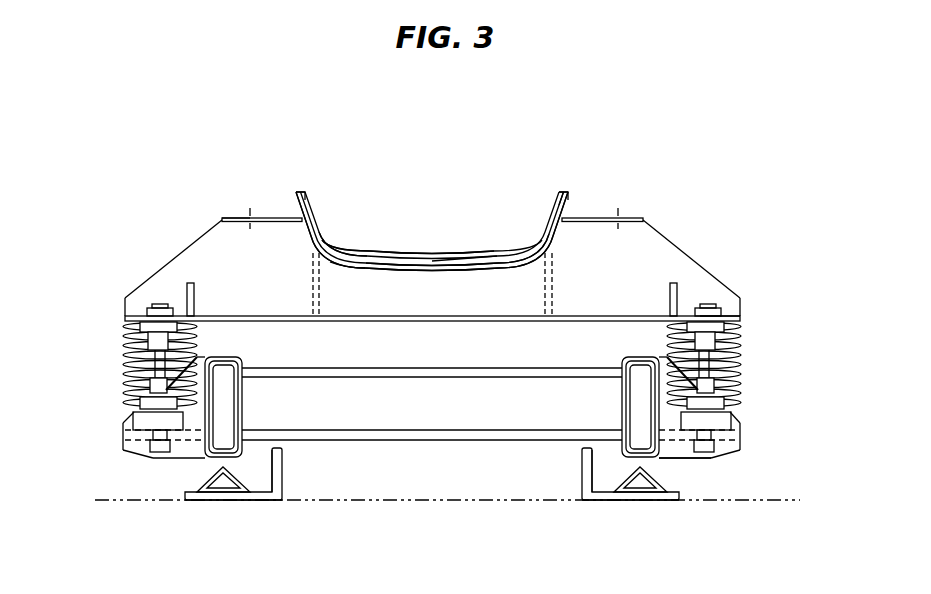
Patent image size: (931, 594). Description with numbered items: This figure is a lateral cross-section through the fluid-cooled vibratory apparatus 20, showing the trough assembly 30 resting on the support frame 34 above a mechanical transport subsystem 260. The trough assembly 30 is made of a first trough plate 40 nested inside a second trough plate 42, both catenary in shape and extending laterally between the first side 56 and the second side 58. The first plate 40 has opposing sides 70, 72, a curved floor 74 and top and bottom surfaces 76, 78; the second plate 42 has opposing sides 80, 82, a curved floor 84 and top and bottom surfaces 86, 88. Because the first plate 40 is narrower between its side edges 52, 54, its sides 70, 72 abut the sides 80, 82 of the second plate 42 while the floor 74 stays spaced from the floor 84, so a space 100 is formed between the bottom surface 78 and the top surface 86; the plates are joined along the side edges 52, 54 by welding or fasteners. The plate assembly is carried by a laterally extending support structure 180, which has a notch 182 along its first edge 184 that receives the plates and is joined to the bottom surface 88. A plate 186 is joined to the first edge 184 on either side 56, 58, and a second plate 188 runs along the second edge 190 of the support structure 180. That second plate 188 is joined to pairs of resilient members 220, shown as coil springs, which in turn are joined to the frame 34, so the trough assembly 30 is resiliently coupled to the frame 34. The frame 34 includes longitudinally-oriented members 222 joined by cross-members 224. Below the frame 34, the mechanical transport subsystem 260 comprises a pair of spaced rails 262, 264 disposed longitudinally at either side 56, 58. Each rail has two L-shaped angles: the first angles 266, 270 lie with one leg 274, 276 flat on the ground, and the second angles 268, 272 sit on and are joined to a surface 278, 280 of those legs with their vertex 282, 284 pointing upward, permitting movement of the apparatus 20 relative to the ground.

The fluid-cooled vibratory apparatus 20 is at (439, 222).
The trough assembly 30 is at (663, 250).
The support frame 34 is at (733, 452).
The first trough plate 40 is at (550, 229).
The second trough plate 42 is at (572, 200).
The first side edge 52 is at (300, 191).
The second side edge 54 is at (568, 190).
The first side 56 is at (147, 258).
The second side 58 is at (729, 257).
The first plate side 70 is at (313, 200).
The first plate side 72 is at (552, 200).
The curved floor 74 is at (334, 243).
The top surface 76 is at (372, 247).
The bottom surface 78 is at (400, 258).
The second plate side 80 is at (303, 235).
The second plate side 82 is at (563, 242).
The curved floor 84 is at (348, 272).
The top surface 86 is at (438, 268).
The bottom surface 88 is at (403, 275).
The space 100 is at (497, 256).
The support structure 180 is at (720, 296).
The notch 182 is at (557, 263).
The first edge 184 is at (207, 218).
The plate 186 is at (226, 217).
The second plate 188 is at (138, 318).
The second edge 190 is at (120, 330).
The resilient member 220 is at (137, 400).
The longitudinally-oriented member 222 is at (240, 357).
The cross-member 224 is at (443, 382).
The mechanical transport subsystem 260 is at (693, 518).
The rail 262 is at (574, 476).
The rail 264 is at (288, 477).
The first L-shaped angle 266 is at (209, 500).
The second L-shaped angle 268 is at (203, 477).
The first L-shaped angle 270 is at (617, 500).
The second L-shaped angle 272 is at (660, 482).
The leg 274 is at (266, 500).
The leg 276 is at (582, 500).
The surface 278 is at (261, 490).
The surface 280 is at (601, 470).
The vertex 282 is at (223, 465).
The vertex 284 is at (638, 462).